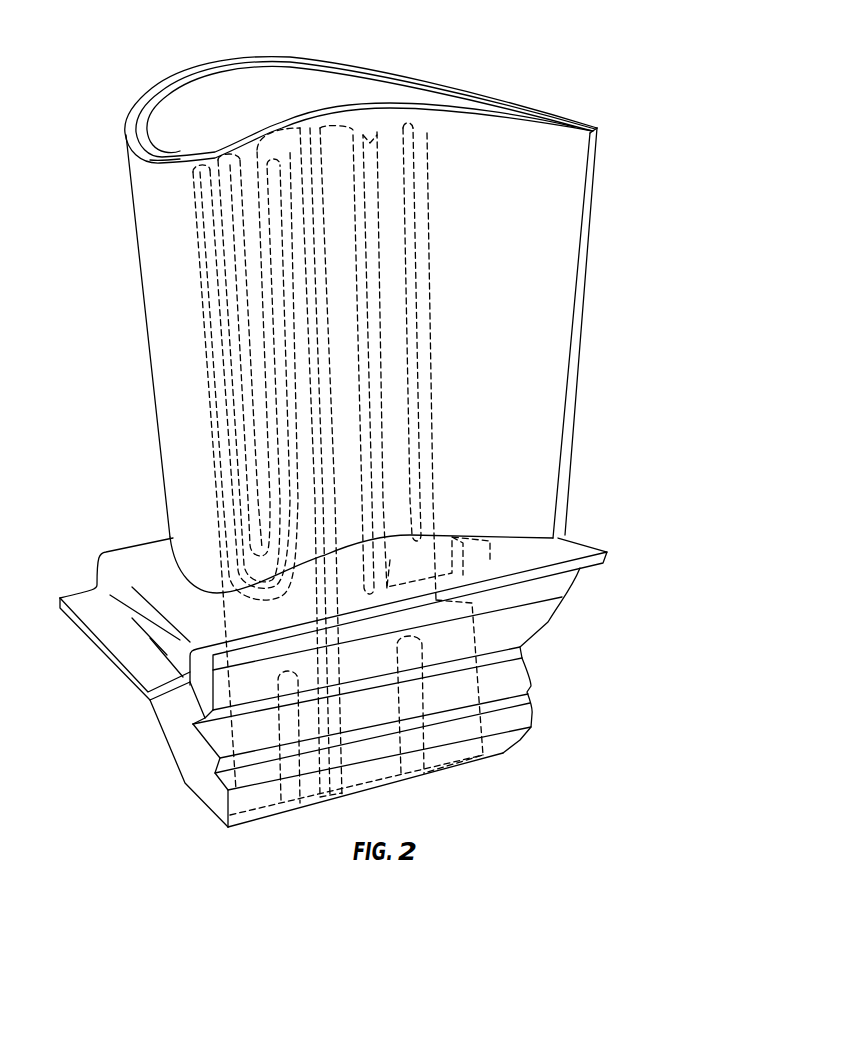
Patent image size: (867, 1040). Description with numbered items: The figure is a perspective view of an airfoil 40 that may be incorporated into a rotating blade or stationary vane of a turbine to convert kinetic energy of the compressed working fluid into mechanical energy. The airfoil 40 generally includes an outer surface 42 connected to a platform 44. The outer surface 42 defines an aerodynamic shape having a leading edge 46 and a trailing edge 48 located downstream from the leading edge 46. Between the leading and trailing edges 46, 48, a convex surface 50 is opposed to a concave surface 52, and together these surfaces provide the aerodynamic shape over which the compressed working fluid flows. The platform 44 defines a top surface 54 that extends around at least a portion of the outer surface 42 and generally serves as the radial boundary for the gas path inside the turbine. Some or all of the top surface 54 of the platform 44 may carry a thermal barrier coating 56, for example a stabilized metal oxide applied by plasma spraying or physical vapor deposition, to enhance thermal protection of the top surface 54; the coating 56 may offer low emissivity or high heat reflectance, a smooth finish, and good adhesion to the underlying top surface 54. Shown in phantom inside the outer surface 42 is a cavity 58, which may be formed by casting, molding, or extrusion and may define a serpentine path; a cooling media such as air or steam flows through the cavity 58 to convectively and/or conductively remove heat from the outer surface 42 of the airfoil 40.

The airfoil 40 is at (672, 124).
The outer surface 42 is at (172, 180).
The platform 44 is at (588, 524).
The leading edge 46 is at (138, 272).
The trailing edge 48 is at (585, 313).
The convex surface 50 is at (441, 88).
The concave surface 52 is at (479, 331).
The top surface 54 is at (201, 622).
The thermal barrier coating 56 is at (137, 553).
The cavity 58 is at (232, 330).